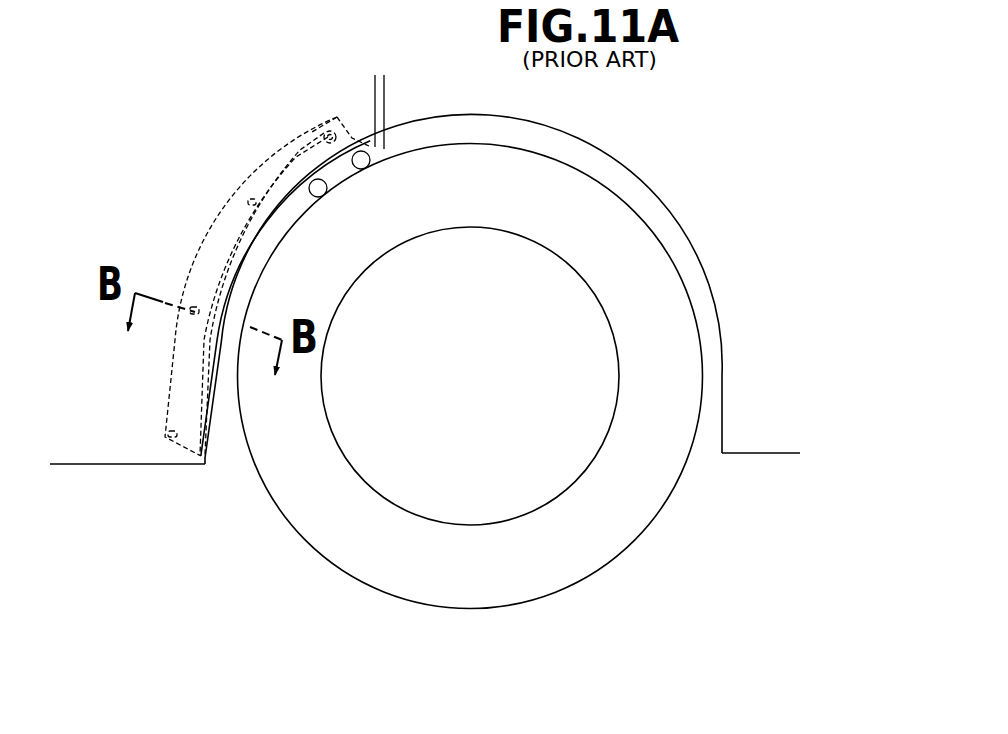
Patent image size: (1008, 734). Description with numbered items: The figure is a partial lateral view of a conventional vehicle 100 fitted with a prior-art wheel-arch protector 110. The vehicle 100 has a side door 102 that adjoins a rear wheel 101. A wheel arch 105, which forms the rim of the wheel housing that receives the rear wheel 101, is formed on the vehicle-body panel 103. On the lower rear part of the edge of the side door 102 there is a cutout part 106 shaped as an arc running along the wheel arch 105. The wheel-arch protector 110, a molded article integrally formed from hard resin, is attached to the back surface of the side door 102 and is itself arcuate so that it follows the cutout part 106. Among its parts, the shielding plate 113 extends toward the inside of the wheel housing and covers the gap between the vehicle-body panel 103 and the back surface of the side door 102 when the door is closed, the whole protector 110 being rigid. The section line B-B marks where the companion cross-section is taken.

The vehicle 100 is at (202, 514).
The rear wheel 101 is at (631, 507).
The side door 102 is at (87, 462).
The vehicle-body panel 103 is at (773, 435).
The wheel arch 105 is at (370, 145).
The cutout part 106 is at (322, 186).
The wheel-arch protector 110 is at (230, 207).
The shielding plate 113 is at (232, 248).